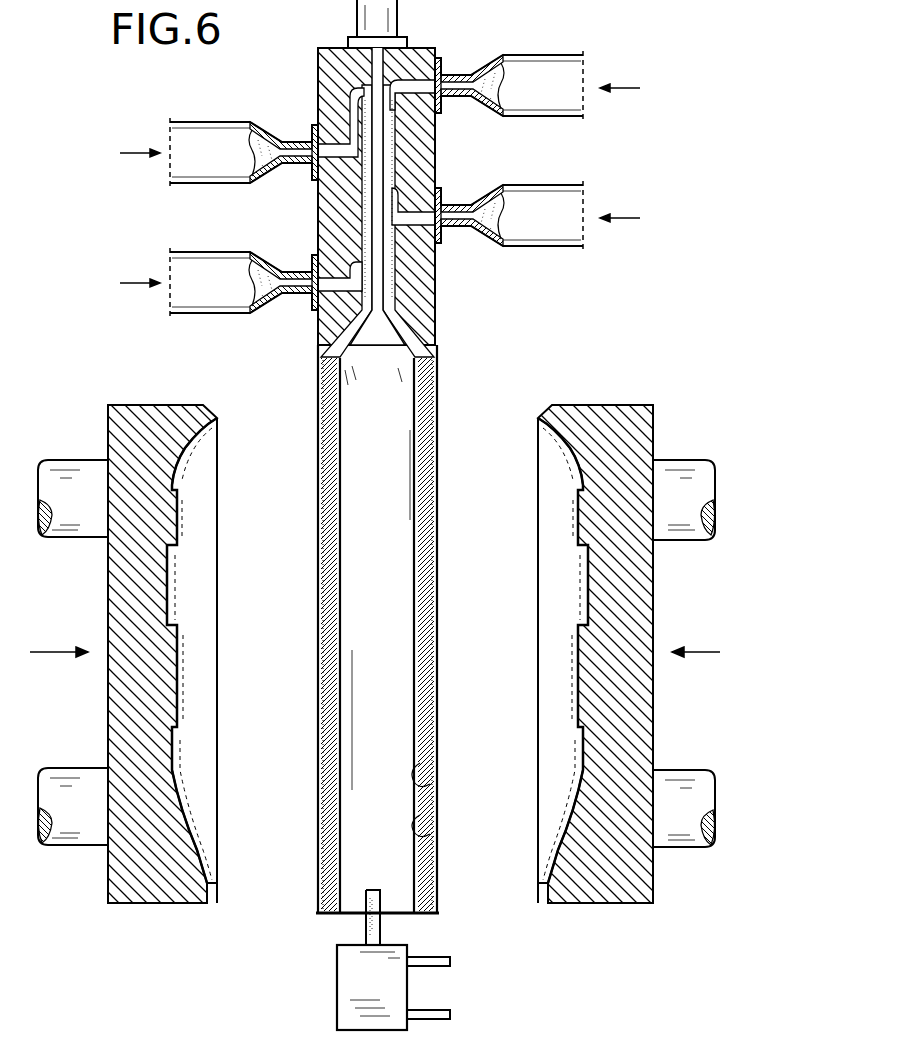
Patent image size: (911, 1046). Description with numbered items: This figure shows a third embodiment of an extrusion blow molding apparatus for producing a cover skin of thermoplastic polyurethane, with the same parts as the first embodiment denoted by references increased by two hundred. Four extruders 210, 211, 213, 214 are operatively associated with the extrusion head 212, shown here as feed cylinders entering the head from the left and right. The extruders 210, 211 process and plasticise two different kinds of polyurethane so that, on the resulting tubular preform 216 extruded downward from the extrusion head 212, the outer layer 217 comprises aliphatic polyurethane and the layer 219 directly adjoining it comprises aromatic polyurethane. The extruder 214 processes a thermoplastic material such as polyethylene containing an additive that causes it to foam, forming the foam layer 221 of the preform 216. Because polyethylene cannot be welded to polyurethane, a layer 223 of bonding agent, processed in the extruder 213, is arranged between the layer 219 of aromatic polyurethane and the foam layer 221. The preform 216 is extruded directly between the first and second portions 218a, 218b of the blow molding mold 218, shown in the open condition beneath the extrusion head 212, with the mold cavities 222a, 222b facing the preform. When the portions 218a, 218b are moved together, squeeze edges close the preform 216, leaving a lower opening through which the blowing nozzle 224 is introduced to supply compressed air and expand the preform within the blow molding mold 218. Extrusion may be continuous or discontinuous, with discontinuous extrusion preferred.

The extruder 210 is at (207, 318).
The extruder 211 is at (548, 235).
The extrusion head 212 is at (428, 310).
The extruder 213 is at (212, 130).
The extruder 214 is at (540, 66).
The preform 216 is at (422, 629).
The outer layer 217 is at (432, 700).
The blow molding mold 218 is at (376, 648).
The first portion of blow molding mold 218a is at (168, 685).
The second portion of blow molding mold 218b is at (585, 685).
The layer of aromatic polyurethane 219 is at (433, 730).
The foam layer 221 is at (428, 790).
The mold cavity 222a is at (197, 600).
The mold cavity 222b is at (545, 598).
The layer of bonding agent 223 is at (428, 838).
The blowing nozzle 224 is at (372, 920).